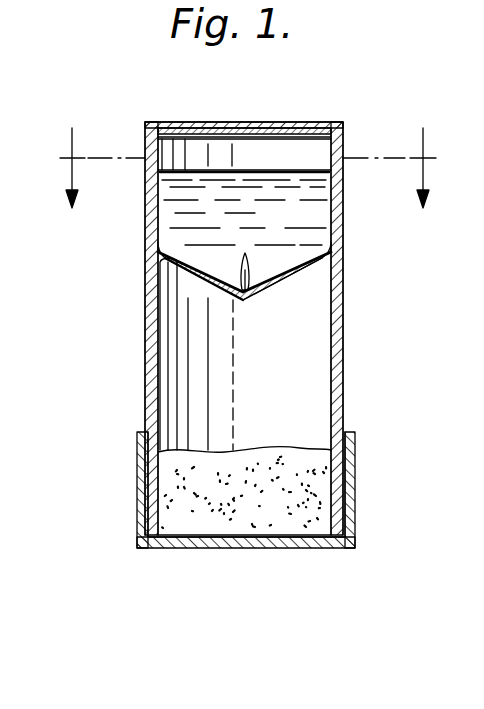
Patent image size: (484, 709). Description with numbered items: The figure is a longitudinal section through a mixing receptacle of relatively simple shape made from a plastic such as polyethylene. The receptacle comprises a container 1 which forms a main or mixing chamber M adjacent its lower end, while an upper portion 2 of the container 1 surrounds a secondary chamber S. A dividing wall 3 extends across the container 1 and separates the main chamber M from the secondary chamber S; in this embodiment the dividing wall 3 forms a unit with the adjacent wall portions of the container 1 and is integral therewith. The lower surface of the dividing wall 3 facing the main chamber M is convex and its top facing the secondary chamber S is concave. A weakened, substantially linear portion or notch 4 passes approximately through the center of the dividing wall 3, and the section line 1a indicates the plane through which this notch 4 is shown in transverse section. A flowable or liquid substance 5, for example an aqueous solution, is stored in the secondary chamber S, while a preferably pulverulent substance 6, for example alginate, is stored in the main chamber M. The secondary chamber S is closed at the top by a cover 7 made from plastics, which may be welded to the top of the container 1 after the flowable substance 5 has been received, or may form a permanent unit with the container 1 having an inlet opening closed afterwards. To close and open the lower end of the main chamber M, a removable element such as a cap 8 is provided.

The container 1 is at (344, 385).
The section line 1a is at (239, 168).
The upper portion 2 is at (145, 218).
The dividing wall 3 is at (205, 287).
The notch 4 is at (255, 285).
The flowable substance 5 is at (285, 214).
The pulverulent substance 6 is at (305, 481).
The cover 7 is at (272, 130).
The cap 8 is at (142, 483).
The secondary chamber S is at (205, 140).
The main chamber m is at (200, 380).